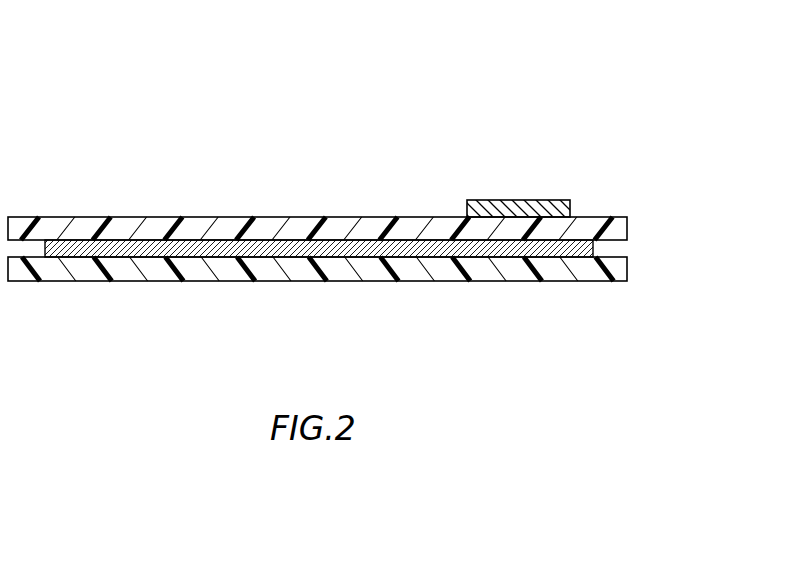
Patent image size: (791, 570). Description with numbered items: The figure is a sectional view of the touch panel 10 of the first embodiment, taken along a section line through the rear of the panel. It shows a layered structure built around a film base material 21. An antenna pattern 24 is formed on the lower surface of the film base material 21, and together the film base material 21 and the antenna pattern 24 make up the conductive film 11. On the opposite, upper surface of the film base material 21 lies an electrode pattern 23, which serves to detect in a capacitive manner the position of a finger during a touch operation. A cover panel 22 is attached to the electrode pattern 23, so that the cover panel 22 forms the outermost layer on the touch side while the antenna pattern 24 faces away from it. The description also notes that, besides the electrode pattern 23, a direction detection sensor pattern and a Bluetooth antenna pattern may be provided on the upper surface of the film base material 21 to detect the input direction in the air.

The touch panel 10 is at (341, 180).
The conductive film 11 is at (317, 171).
The film base material 21 is at (591, 217).
The cover panel 22 is at (125, 272).
The electrode pattern 23 is at (592, 250).
The antenna pattern 24 is at (518, 182).